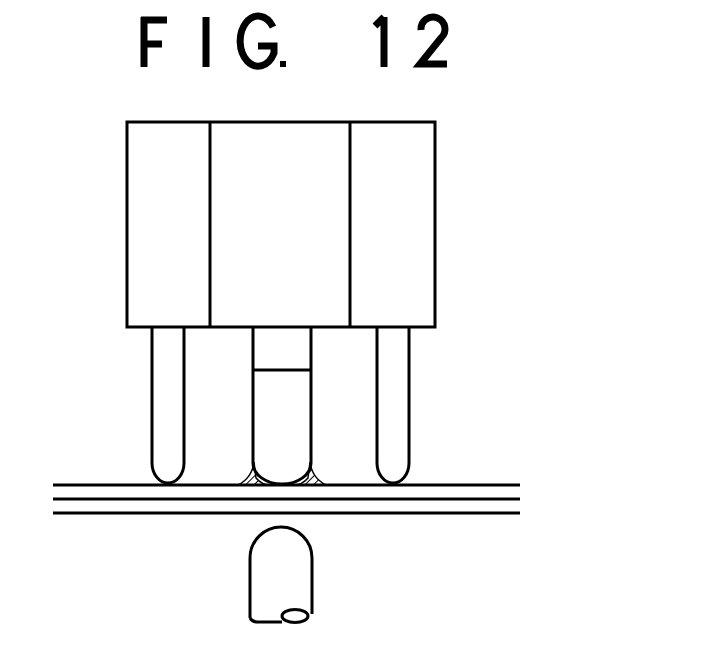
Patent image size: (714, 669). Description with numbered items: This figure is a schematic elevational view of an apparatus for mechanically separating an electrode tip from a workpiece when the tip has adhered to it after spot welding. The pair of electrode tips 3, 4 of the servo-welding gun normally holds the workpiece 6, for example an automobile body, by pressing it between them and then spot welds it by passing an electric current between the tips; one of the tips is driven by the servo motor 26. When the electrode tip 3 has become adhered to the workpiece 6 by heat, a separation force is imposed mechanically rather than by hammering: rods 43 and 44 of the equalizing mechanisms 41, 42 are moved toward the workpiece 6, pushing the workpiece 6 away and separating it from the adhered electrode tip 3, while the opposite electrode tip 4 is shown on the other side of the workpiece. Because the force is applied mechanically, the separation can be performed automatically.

The servo motor 26 is at (322, 138).
The equalizing mechanism 41 is at (128, 266).
The second portion of package 42 is at (436, 270).
The rod 43 is at (152, 410).
The electrode tip 3 is at (311, 410).
The rod 44 is at (410, 414).
The workpiece 6 is at (470, 486).
The electrode tip 4 is at (312, 576).